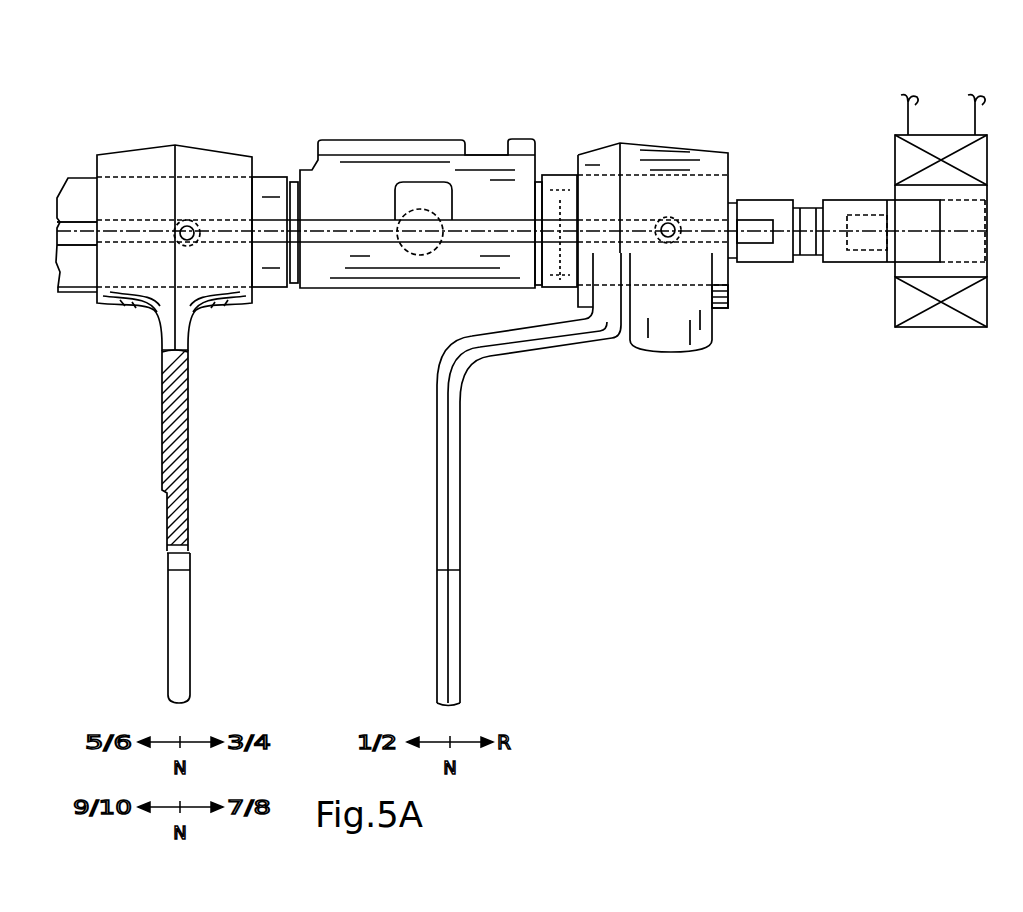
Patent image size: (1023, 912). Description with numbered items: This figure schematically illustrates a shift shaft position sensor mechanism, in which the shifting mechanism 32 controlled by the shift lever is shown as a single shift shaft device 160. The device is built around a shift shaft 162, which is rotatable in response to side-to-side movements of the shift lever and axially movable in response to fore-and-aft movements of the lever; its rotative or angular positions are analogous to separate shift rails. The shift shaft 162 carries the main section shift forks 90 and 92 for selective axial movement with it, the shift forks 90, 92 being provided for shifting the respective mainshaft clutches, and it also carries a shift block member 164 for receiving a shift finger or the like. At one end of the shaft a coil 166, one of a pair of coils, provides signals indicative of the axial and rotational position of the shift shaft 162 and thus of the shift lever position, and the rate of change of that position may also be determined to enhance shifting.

The shifting mechanism 32 is at (286, 96).
The shift fork 90 is at (452, 472).
The shift fork 92 is at (178, 432).
The single shift shaft device 160 is at (665, 118).
The shift shaft 162 is at (75, 267).
The shift block member 164 is at (414, 133).
The coil 166 is at (951, 345).